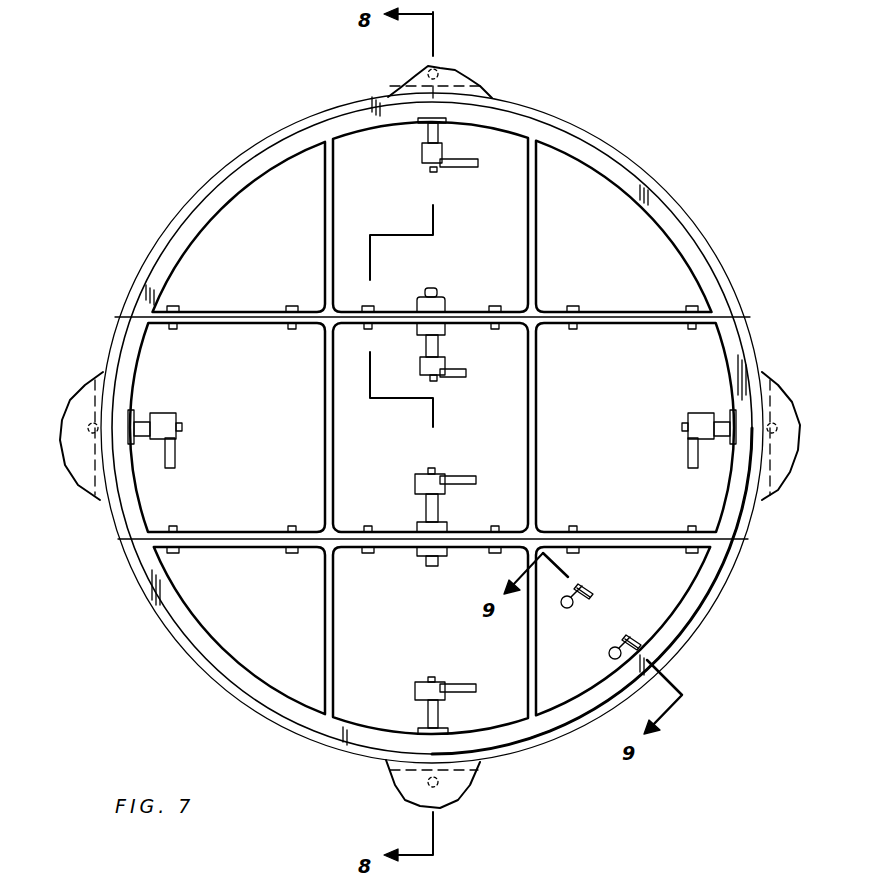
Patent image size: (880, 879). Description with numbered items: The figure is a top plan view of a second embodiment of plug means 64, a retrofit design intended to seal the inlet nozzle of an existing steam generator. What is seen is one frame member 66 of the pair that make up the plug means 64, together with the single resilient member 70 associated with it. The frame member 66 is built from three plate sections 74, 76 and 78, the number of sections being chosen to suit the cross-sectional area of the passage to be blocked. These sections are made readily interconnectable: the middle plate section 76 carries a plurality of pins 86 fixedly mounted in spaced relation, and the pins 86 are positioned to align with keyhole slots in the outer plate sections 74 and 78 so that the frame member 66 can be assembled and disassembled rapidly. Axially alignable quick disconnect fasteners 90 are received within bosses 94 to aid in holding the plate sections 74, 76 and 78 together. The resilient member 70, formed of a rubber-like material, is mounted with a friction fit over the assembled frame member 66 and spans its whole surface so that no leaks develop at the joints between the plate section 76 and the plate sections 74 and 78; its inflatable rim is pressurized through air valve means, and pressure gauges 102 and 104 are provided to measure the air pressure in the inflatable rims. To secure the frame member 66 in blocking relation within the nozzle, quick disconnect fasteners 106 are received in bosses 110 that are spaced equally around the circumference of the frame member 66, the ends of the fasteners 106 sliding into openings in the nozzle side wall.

The plug means 64 is at (700, 217).
The frame member 66 is at (612, 182).
The resilient member 70 is at (248, 147).
The plate section 74 is at (603, 246).
The plate section 76 is at (603, 406).
The plate section 78 is at (640, 596).
The pins 86 is at (583, 306).
The quick disconnect fastener 90 is at (418, 478).
The boss 94 is at (418, 522).
The pressure gauge 102 is at (606, 659).
The pressure gauge 104 is at (572, 610).
The quick disconnect fastener 106 is at (420, 165).
The boss 110 is at (420, 124).